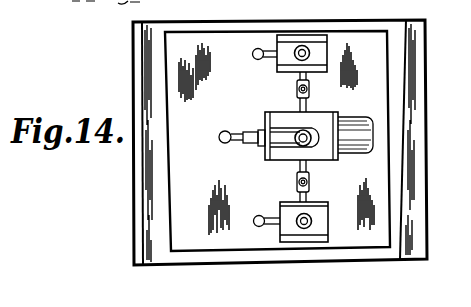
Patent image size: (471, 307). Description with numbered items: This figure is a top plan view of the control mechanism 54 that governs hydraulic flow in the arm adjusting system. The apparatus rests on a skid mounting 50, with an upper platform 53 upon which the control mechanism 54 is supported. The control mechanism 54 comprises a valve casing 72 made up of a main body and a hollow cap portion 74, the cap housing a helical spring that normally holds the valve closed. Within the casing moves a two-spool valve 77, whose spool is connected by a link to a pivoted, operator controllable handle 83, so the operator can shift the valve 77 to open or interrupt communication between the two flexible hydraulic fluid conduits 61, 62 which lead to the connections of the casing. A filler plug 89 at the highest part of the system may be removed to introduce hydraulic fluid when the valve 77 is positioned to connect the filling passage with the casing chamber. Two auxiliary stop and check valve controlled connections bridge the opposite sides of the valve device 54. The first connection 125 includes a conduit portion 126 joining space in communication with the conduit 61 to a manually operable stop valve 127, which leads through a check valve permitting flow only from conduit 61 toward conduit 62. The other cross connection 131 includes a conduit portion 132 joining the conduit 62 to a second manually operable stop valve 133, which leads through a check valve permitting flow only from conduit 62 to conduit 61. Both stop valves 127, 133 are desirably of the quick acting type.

The skid mounting 50 is at (424, 46).
The upper platform 53 is at (218, 45).
The control mechanism 54 is at (283, 112).
The flexible hydraulic fluid conduit 61 is at (307, 89).
The flexible hydraulic fluid conduit 62 is at (311, 183).
The valve casing 72 is at (320, 118).
The hollow cap portion 74 is at (365, 123).
The two-spool valve 77 is at (257, 147).
The operator controllable handle 83 is at (238, 132).
The filler plug 89 is at (298, 144).
The stop and check valve controlled connection 125 is at (291, 42).
The conduit portion 126 is at (278, 73).
The manually operable stop valve 127 is at (313, 46).
The cross connection 131 is at (307, 236).
The conduit portion 132 is at (288, 203).
The manually operable stop valve 133 is at (290, 230).